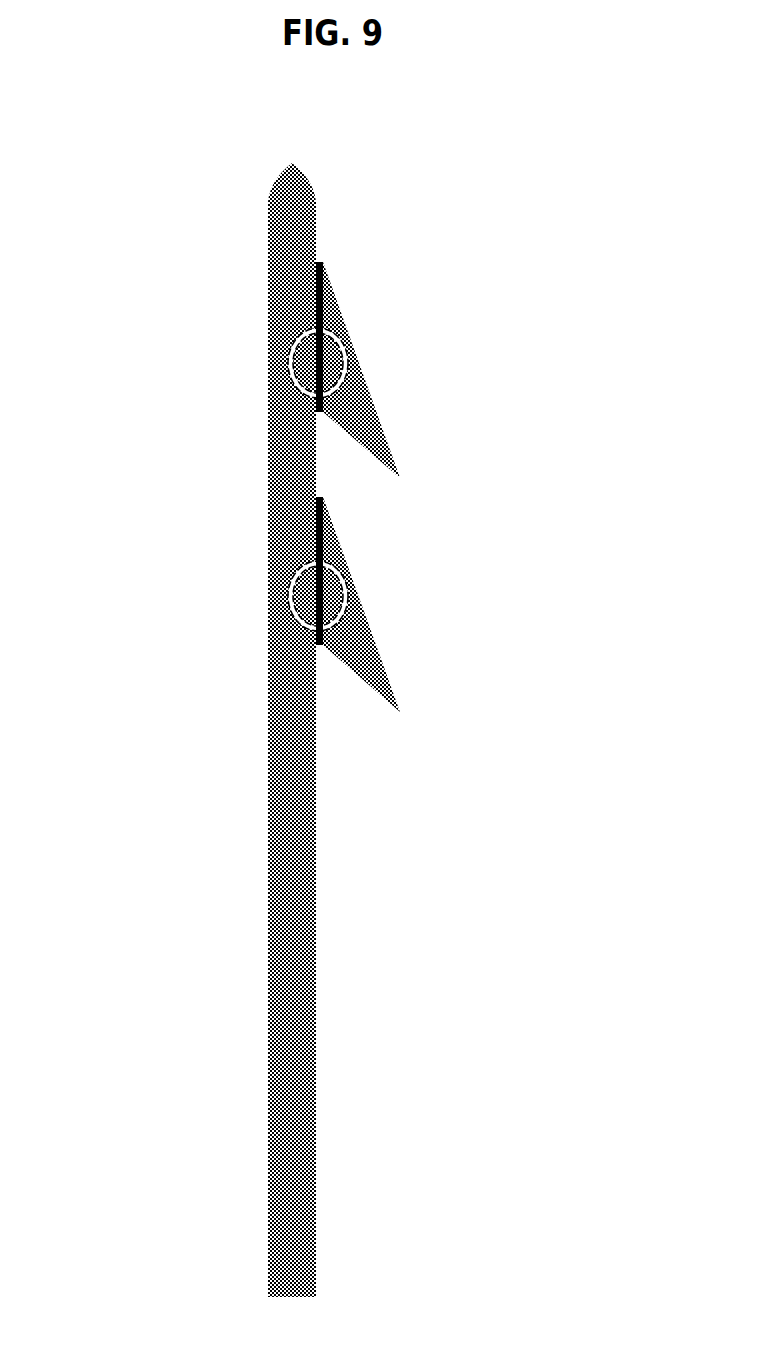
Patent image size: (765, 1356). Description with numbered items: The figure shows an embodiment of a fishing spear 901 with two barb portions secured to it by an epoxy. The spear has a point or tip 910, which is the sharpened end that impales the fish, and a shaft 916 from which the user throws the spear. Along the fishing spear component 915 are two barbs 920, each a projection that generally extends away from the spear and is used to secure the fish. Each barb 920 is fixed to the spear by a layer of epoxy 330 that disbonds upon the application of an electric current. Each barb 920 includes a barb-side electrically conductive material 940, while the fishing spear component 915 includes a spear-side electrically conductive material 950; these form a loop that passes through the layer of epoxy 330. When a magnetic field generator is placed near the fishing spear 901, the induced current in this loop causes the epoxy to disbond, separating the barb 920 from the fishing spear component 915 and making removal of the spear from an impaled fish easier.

The fishing spear 901 is at (85, 159).
The point or tip 910 is at (284, 715).
The fishing spear component 915 is at (292, 850).
The shaft 916 is at (263, 1148).
The barb 920 is at (382, 487).
The barb-side electrically conductive material 940 is at (348, 350).
The spear-side electrically conductive material 950 is at (292, 352).
The layer of epoxy 330 is at (323, 262).